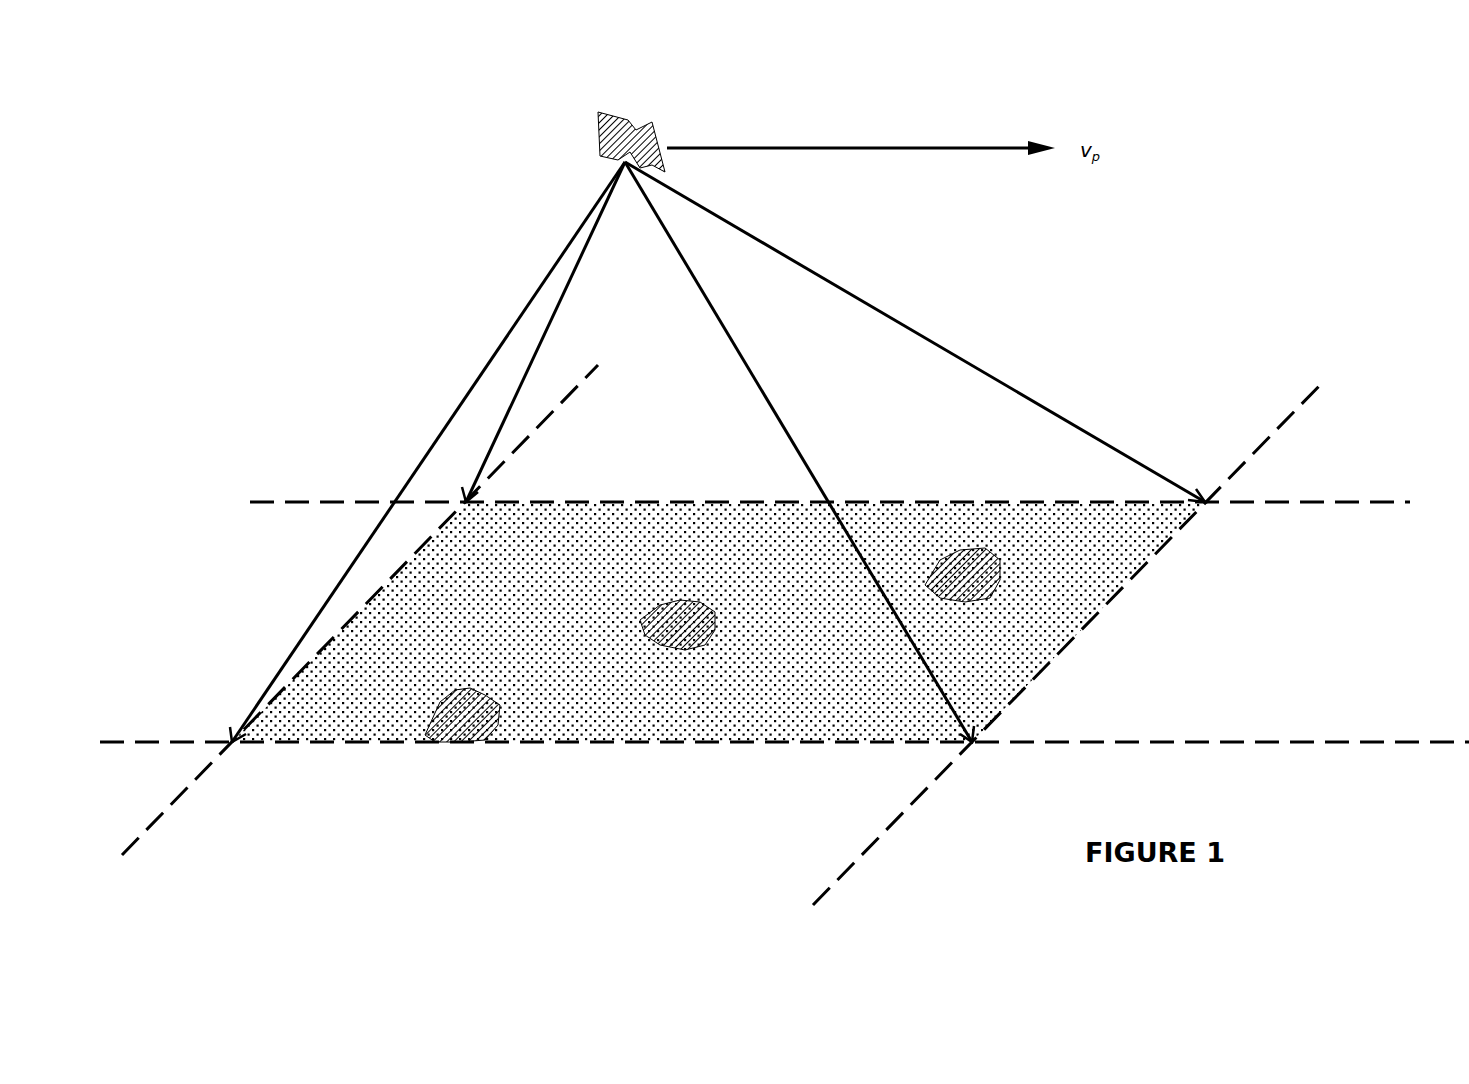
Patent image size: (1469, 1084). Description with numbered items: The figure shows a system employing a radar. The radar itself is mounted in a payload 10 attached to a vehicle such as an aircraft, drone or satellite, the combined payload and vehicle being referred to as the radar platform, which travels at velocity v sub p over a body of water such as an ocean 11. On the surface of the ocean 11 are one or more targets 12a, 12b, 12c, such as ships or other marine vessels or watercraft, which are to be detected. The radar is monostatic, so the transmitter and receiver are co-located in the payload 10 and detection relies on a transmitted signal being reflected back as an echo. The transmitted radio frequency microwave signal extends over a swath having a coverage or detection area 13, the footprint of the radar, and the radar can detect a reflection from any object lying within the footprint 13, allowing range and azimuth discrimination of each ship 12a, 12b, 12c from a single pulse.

The payload 10 is at (594, 127).
The ocean 11 is at (246, 572).
The target 12a is at (480, 741).
The target 12b is at (708, 632).
The target 12c is at (980, 596).
The detection area 13 is at (620, 518).